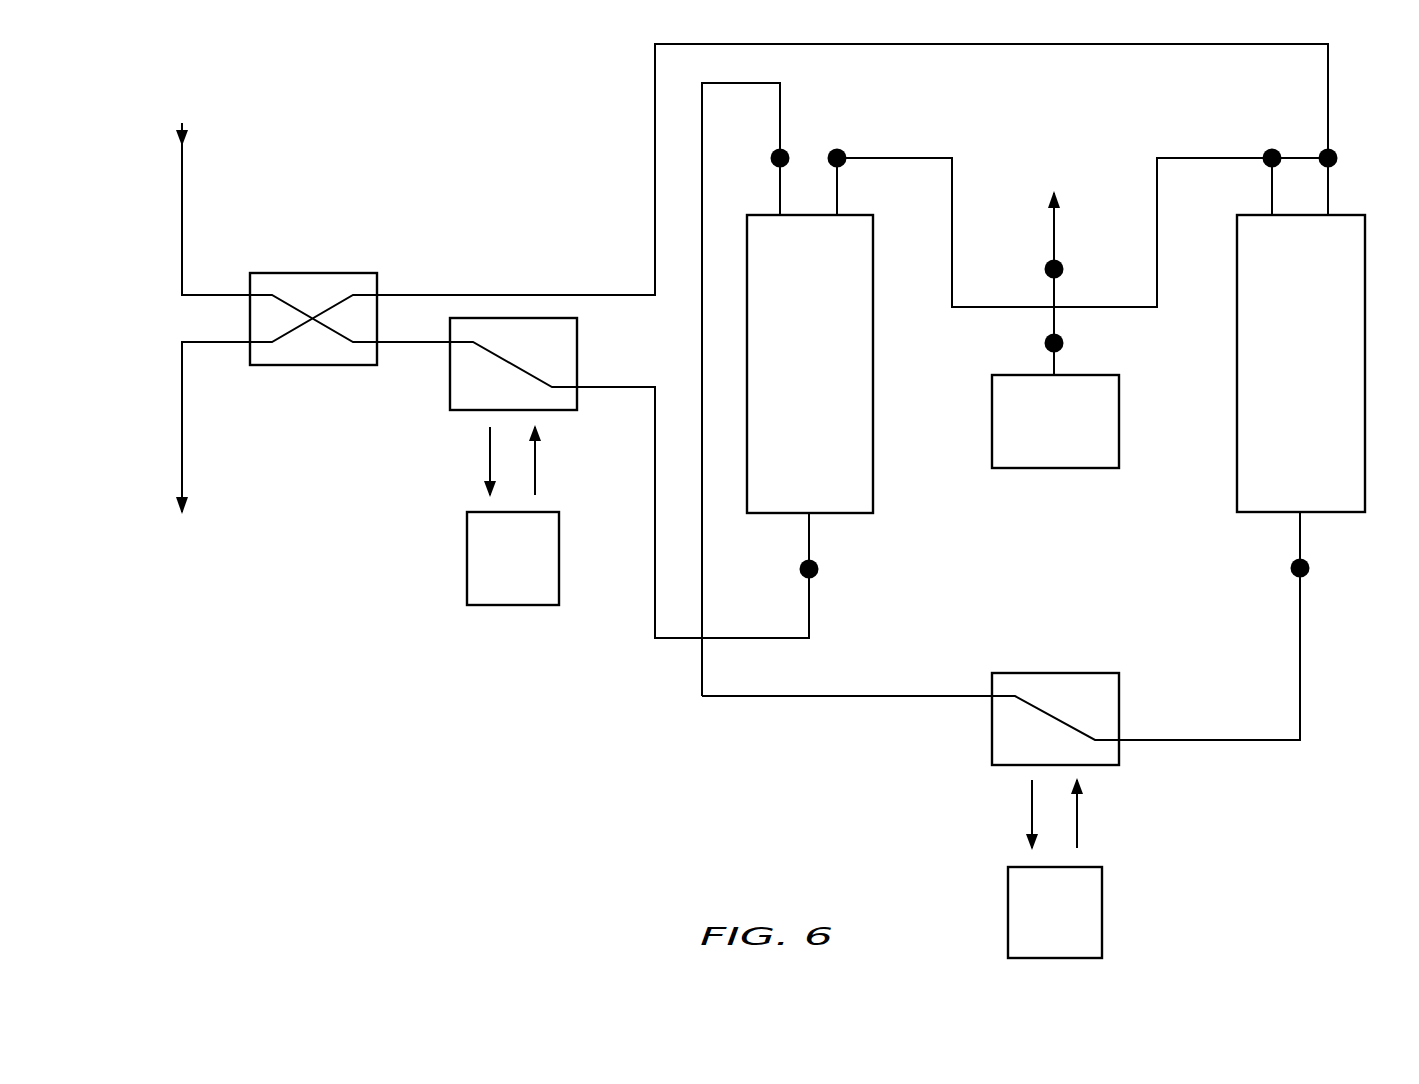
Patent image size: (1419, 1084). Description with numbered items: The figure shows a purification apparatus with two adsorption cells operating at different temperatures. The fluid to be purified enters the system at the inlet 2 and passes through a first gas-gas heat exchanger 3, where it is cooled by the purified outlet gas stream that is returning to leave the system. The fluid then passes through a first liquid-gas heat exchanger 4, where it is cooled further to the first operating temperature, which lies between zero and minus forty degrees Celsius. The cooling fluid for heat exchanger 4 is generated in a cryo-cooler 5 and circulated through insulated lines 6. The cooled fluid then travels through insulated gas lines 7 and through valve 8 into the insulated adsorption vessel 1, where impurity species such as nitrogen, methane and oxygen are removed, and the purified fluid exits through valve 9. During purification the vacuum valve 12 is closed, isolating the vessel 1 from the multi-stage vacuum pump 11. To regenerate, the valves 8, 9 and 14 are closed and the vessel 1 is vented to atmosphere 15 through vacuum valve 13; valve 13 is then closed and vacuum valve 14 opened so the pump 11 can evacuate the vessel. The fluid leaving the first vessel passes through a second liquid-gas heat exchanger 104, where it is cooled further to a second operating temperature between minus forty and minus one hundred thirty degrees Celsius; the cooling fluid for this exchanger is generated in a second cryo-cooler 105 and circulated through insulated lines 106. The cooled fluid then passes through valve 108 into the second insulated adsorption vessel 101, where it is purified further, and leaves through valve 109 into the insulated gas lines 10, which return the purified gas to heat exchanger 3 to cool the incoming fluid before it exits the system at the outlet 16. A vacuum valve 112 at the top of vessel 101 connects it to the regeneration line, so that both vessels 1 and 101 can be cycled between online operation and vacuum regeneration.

The adsorption vessel 1 is at (810, 364).
The system inlet 2 is at (182, 158).
The gas-gas heat exchanger 3 is at (356, 273).
The liquid-gas heat exchanger 4 is at (450, 391).
The cryo-cooler 5 is at (513, 558).
The insulated lines 6 is at (490, 464).
The insulated gas lines 7 is at (655, 624).
The valve 8 is at (819, 569).
The valve 9 is at (771, 158).
The insulated gas lines 10 is at (655, 56).
The multi-stage vacuum pump 11 is at (1055, 421).
The vacuum valve 12 is at (837, 149).
The vacuum valve 13 is at (1064, 269).
The vacuum valve 14 is at (1064, 343).
The atmosphere vent 15 is at (1056, 213).
The system outlet 16 is at (182, 478).
The second adsorption vessel 101 is at (1301, 363).
The second liquid-gas heat exchanger 104 is at (1085, 673).
The cryo-cooler 105 is at (1055, 912).
The insulated lines 106 is at (1032, 815).
The valve 108 is at (1310, 568).
The valve 109 is at (1338, 158).
The vacuum valve 112 is at (1272, 149).